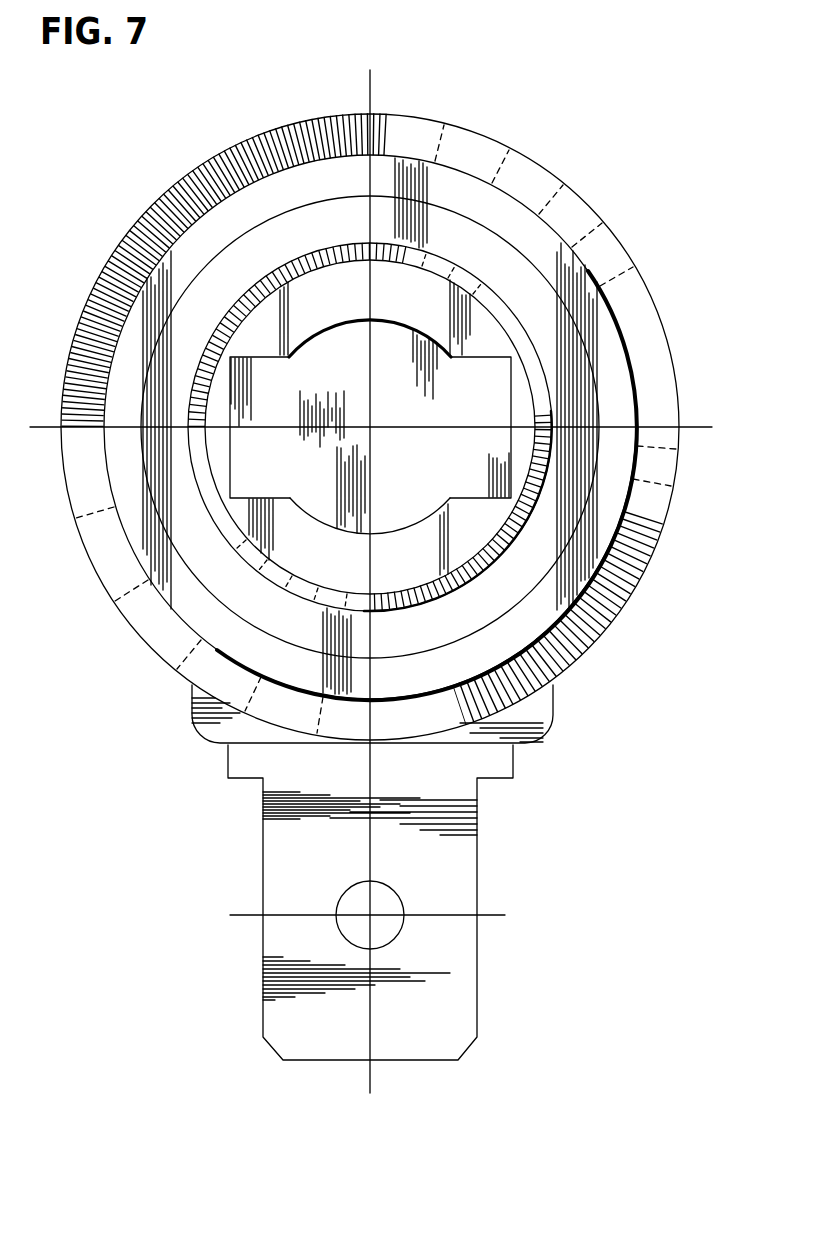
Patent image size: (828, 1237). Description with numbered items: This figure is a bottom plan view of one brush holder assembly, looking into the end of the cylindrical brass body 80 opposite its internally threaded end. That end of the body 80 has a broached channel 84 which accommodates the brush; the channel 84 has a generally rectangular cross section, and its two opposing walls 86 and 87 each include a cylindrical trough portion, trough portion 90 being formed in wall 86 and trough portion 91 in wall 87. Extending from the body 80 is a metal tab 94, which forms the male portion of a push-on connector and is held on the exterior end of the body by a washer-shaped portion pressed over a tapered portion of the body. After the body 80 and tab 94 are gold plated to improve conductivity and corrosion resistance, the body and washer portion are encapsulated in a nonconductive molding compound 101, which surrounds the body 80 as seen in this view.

The cylindrical brass body 80 is at (398, 427).
The broached channel 84 is at (505, 421).
The opposing wall of channel 86 is at (383, 427).
The opposing wall of channel 87 is at (370, 427).
The cylindrical trough portion 90 is at (370, 319).
The cylindrical trough portion 91 is at (370, 542).
The metal tab 94 is at (383, 902).
The nonconductive molding compound 101 is at (388, 427).